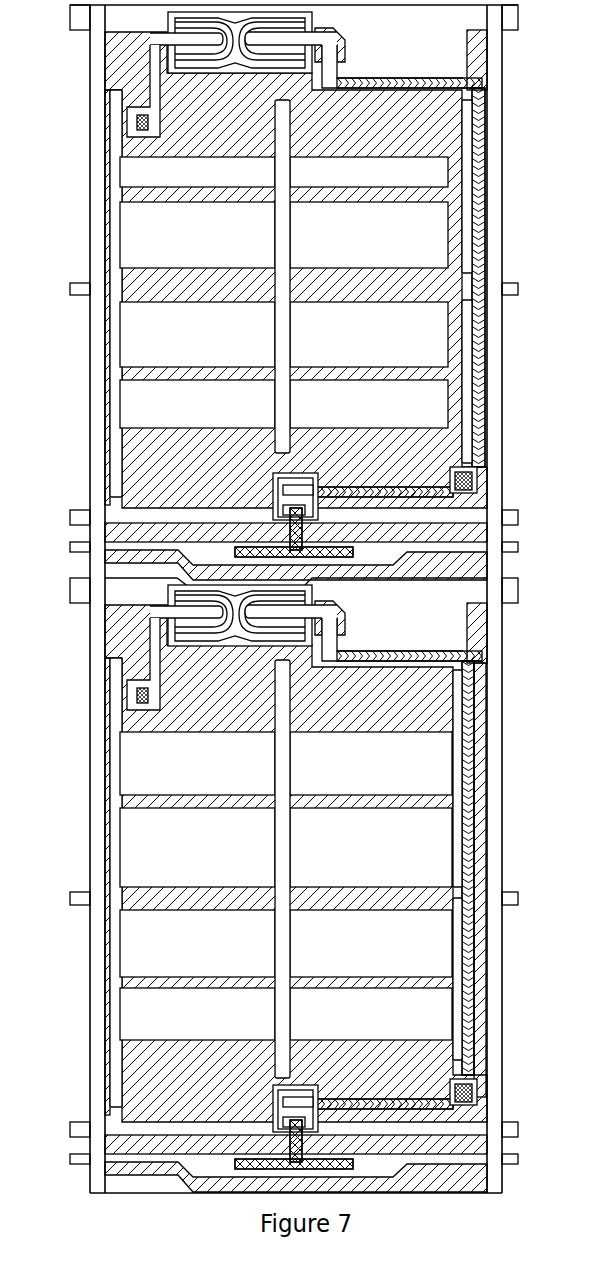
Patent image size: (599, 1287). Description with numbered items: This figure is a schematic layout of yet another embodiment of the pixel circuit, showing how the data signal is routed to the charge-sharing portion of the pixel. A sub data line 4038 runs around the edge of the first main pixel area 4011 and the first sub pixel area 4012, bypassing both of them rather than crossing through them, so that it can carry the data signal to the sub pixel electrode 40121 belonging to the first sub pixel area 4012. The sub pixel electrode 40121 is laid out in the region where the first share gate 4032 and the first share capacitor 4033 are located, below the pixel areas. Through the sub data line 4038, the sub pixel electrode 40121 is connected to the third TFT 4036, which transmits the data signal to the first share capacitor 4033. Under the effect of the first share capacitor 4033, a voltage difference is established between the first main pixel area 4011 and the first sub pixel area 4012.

The first main pixel area 4011 is at (432, 174).
The first sub pixel area 4012 is at (425, 336).
The sub pixel electrode 40121 is at (473, 482).
The first share gate 4032 is at (470, 518).
The first share capacitor 4033 is at (353, 553).
The third TFT 4036 is at (282, 500).
The sub data line 4038 is at (470, 110).